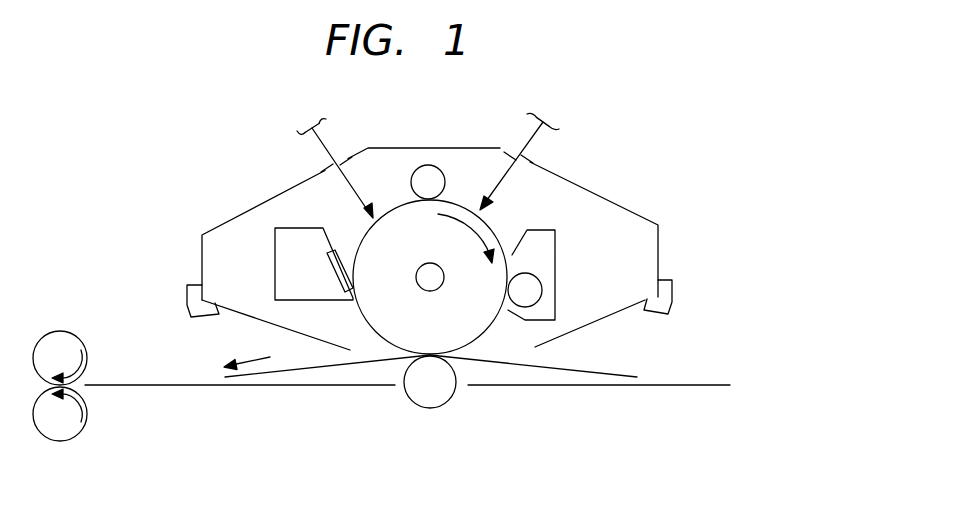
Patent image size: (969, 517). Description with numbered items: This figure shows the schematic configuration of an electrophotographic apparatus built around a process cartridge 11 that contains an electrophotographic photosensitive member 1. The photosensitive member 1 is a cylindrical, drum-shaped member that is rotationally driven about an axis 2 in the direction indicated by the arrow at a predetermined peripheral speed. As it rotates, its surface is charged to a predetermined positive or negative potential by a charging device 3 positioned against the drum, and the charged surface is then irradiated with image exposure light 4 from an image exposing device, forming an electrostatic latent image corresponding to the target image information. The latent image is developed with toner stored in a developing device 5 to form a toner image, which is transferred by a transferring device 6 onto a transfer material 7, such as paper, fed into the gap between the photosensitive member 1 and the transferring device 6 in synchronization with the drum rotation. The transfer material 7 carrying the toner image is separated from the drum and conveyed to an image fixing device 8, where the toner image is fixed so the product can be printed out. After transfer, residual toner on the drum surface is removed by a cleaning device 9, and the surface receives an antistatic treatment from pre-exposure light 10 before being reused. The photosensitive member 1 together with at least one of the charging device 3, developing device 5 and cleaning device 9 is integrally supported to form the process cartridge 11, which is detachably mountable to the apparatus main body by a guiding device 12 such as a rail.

The electrophotographic photosensitive member 1 is at (367, 235).
The axis 2 is at (430, 292).
The charging device 3 is at (430, 164).
The image exposure light 4 is at (528, 142).
The developing device 5 is at (541, 229).
The transferring device 6 is at (430, 409).
The transfer material 7 is at (621, 375).
The image fixing device 8 is at (73, 331).
The cleaning device 9 is at (275, 259).
The pre-exposure light 10 is at (316, 147).
The process cartridge 11 is at (612, 200).
The guiding device 12 is at (187, 295).